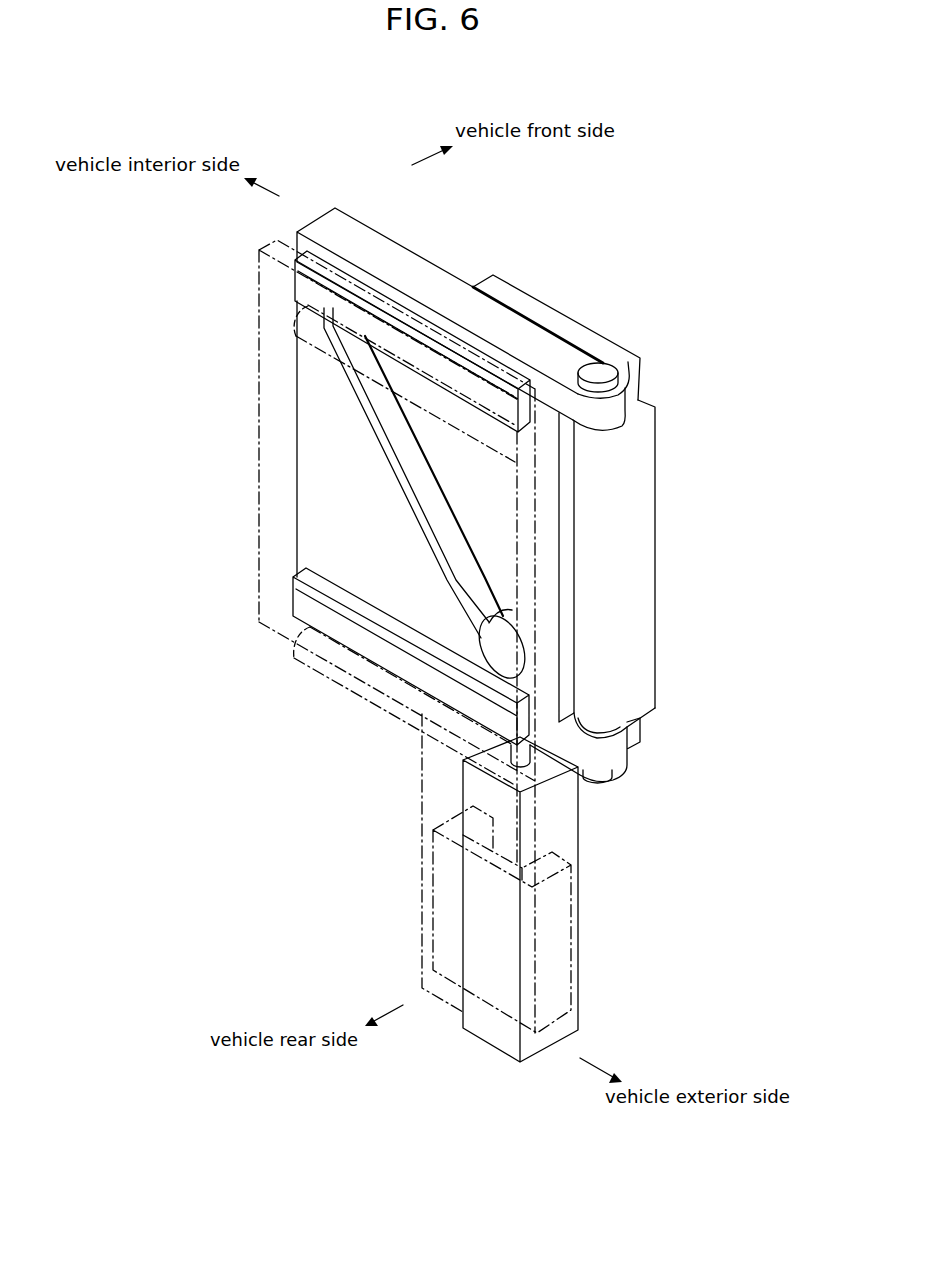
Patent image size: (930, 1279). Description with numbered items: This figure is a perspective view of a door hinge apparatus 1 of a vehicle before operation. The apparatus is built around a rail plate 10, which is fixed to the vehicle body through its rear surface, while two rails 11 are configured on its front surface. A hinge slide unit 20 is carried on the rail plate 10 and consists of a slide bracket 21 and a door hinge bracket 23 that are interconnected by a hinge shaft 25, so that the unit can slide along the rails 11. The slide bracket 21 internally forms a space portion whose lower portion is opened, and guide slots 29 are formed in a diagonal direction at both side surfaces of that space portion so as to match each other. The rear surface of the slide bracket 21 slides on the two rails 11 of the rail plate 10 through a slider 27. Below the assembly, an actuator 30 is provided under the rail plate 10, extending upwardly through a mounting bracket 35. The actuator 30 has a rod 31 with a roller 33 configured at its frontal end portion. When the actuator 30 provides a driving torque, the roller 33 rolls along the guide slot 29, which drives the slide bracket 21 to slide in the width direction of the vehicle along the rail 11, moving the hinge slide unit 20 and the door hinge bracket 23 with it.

The door hinge apparatus 1 is at (624, 225).
The rail plate 10 is at (264, 268).
The rails 11 is at (296, 336).
The hinge slide unit 20 is at (528, 207).
The slide bracket 21 is at (452, 293).
The door hinge bracket 23 is at (508, 297).
The hinge shaft 25 is at (600, 380).
The slider 27 is at (314, 286).
The guide slots 29 is at (400, 462).
The actuator 30 is at (488, 1040).
The rod 31 is at (512, 754).
The roller 33 is at (495, 648).
The mounting bracket 35 is at (572, 938).